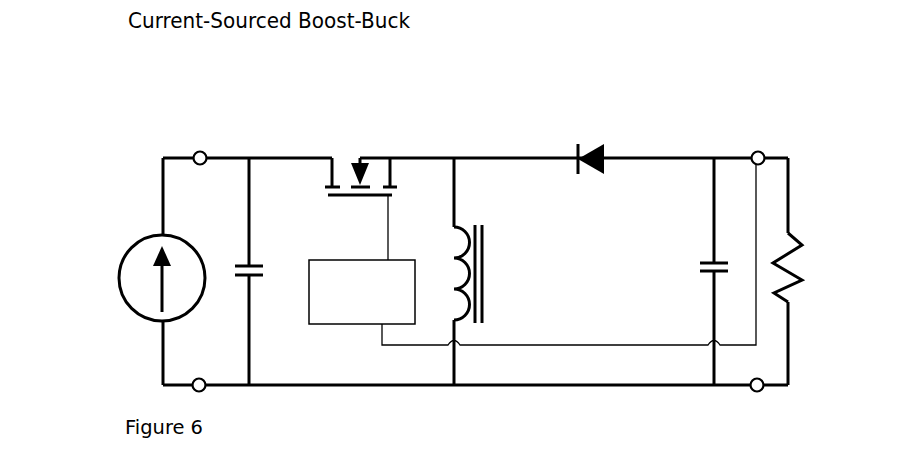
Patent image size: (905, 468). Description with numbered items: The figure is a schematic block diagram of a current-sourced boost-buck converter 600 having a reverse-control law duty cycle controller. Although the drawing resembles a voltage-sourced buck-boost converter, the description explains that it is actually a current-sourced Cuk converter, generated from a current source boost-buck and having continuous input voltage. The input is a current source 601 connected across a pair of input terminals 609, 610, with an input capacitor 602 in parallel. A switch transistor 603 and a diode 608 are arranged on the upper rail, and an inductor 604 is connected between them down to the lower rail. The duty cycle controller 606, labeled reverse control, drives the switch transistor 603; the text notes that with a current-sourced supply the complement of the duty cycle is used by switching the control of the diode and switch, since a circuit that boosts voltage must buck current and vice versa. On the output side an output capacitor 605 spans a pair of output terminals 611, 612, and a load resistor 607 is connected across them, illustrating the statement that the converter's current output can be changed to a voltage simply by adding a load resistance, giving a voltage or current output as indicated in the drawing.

The current-sourced boost-buck converter 600 is at (114, 183).
The current source 601 is at (134, 221).
The input capacitor 602 is at (269, 274).
The switch transistor 603 is at (380, 120).
The inductor 604 is at (489, 240).
The output capacitor 605 is at (701, 266).
The duty cycle control 606 is at (350, 327).
The load resistor 607 is at (806, 252).
The diode 608 is at (588, 143).
The input terminal 609 is at (202, 150).
The input terminal 610 is at (201, 392).
The output terminal 611 is at (756, 151).
The output terminal 612 is at (758, 392).